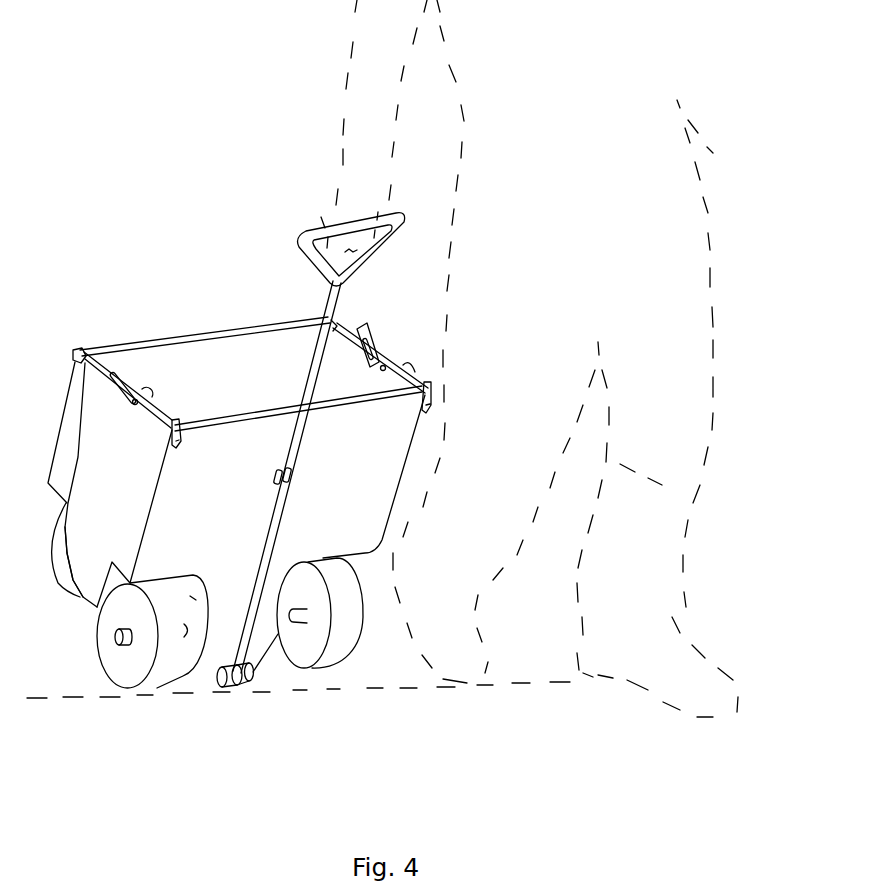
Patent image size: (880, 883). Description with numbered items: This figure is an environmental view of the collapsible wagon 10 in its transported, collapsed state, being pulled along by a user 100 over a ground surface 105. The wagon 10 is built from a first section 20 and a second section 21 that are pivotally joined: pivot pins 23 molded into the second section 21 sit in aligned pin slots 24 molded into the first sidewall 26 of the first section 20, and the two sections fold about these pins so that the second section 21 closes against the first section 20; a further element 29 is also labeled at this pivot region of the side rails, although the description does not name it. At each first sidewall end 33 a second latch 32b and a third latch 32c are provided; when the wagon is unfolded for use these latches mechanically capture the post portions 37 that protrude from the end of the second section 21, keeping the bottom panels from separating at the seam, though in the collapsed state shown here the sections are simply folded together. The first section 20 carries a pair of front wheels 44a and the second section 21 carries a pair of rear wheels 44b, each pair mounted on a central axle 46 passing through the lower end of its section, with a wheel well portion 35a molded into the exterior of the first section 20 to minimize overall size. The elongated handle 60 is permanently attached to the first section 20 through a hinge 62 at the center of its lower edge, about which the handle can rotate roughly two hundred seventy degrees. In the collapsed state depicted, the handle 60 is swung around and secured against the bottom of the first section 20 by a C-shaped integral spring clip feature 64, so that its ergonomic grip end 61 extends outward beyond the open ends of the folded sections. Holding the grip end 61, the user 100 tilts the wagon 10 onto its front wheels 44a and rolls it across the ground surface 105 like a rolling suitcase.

The collapsible wagon 10 is at (168, 226).
The first section 20 is at (405, 507).
The second section 21 is at (134, 345).
The pivot pin 23 is at (133, 406).
The pin slot 24 is at (120, 394).
The first sidewall 26 is at (85, 583).
The hinge joint 29 is at (149, 390).
The second latch 32b is at (434, 396).
The third latch 32c is at (178, 425).
The first sidewall end 33 is at (411, 373).
The wheel well portion 35a is at (286, 601).
The post portion 37 is at (103, 349).
The front wheel 44a is at (118, 662).
The rear wheel 44b is at (55, 547).
The central axle 46 is at (116, 637).
The elongated handle 60 is at (281, 500).
The ergonomic grip end 61 is at (302, 255).
The hinge 62 is at (229, 684).
The spring clip feature 64 is at (294, 479).
The user 100 is at (348, 77).
The ground surface 105 is at (553, 682).